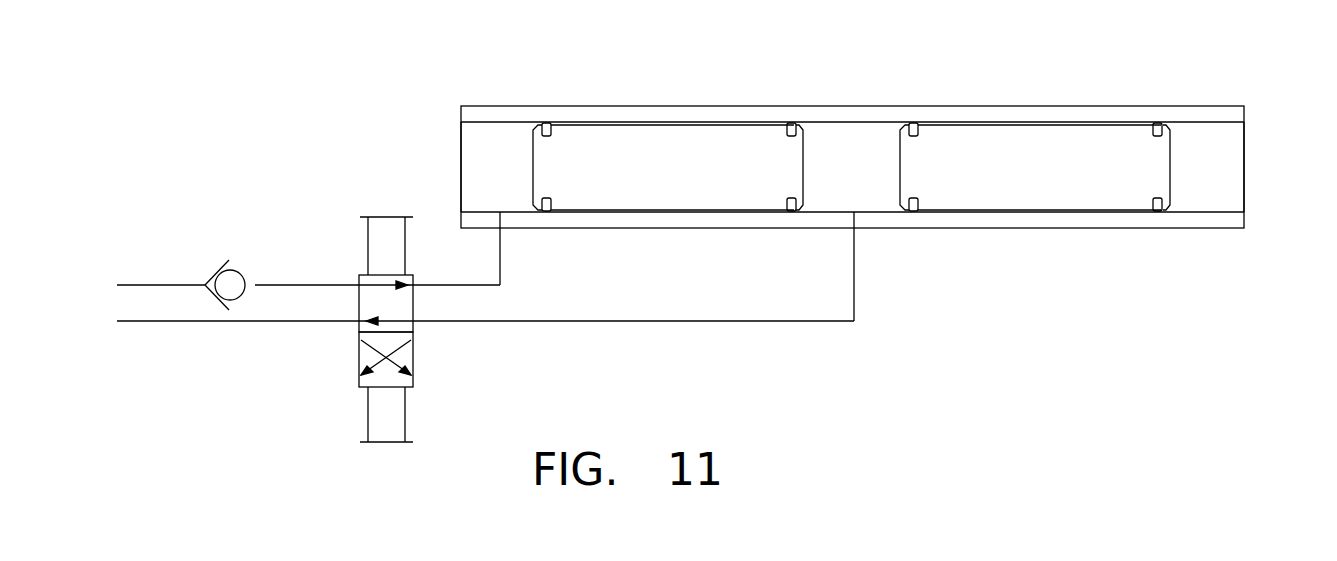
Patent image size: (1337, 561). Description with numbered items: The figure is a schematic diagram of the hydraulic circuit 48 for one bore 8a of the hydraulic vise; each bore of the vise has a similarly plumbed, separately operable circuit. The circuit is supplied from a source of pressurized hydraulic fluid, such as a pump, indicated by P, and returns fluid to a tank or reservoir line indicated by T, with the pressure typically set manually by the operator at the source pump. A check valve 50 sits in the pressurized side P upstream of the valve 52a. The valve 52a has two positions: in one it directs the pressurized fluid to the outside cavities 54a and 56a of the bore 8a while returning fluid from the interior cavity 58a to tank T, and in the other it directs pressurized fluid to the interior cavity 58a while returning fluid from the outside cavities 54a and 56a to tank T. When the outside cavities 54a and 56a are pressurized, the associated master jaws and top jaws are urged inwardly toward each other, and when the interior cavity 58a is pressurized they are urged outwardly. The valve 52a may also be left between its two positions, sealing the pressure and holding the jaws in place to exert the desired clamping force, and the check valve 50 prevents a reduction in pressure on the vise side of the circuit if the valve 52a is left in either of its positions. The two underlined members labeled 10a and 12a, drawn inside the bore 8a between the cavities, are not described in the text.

The hydraulic circuit 48 is at (447, 68).
The bore 8a is at (1212, 213).
The first plate 10a is at (654, 182).
The second plate 12a is at (1012, 183).
The check valve 50 is at (243, 249).
The valve 52a is at (387, 443).
The outside cavity 54a is at (488, 160).
The outside cavity 56a is at (1215, 145).
The interior cavity 58a is at (852, 147).